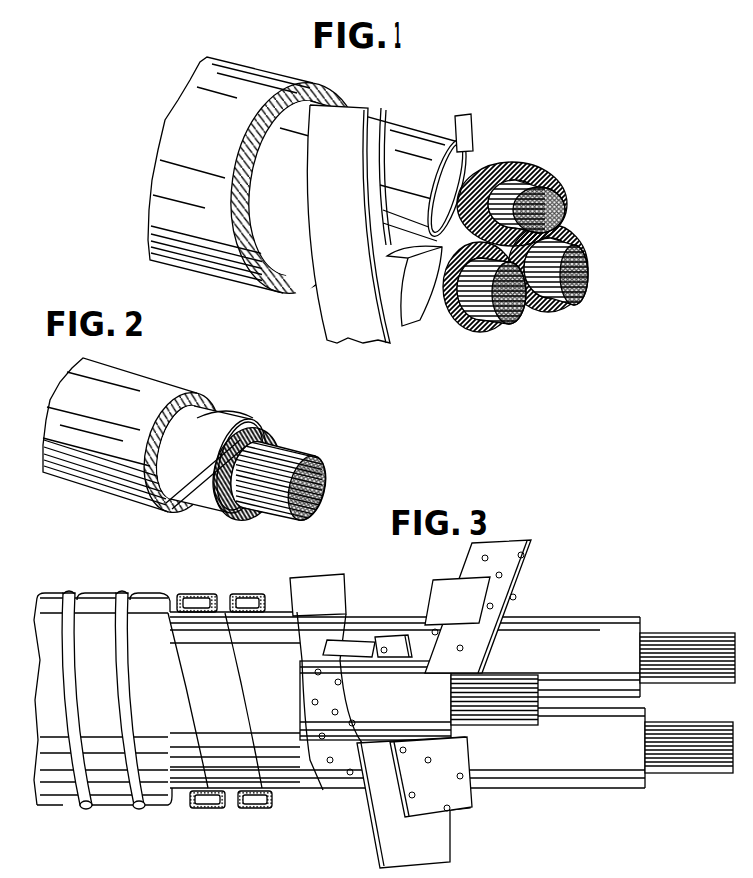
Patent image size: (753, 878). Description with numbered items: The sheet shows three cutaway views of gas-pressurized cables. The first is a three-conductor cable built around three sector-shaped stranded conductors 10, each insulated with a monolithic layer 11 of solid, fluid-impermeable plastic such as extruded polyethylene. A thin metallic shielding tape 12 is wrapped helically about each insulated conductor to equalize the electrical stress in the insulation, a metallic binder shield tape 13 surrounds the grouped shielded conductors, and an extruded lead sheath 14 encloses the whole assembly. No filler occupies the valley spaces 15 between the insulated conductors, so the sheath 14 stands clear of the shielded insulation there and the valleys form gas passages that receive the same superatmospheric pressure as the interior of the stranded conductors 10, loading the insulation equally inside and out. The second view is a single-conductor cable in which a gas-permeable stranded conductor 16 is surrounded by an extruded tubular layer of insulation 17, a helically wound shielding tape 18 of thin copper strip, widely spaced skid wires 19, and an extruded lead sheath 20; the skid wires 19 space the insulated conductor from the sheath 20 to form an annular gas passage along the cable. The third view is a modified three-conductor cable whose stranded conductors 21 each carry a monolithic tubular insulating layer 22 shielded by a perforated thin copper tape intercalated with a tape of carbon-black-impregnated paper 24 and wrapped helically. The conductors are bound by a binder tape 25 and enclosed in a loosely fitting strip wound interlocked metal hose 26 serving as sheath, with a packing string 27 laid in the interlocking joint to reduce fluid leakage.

In FIG. 1, the sector-shaped stranded conductor 10 is at (565, 193).
In FIG. 1, the insulating layer 11 is at (531, 165).
In FIG. 1, the metallic shielding tape 12 is at (481, 132).
In FIG. 1, the metallic binder shield tape 13 is at (331, 303).
In FIG. 1, the lead sheath 14 is at (251, 66).
In FIG. 1, the valley spaces 15 is at (383, 212).
In FIG. 2, the stranded conductor 16 is at (308, 461).
In FIG. 2, the tubular layer of insulation 17 is at (276, 433).
In FIG. 2, the shielding tape 18 is at (246, 420).
In FIG. 2, the skid wires 19 is at (203, 444).
In FIG. 2, the lead sheath 20 is at (150, 377).
In FIG. 3, the stranded conductor 21 is at (688, 634).
In FIG. 3, the tubular insulating layer 22 is at (588, 617).
In FIG. 3, the tape of carbon-black-impregnated paper 24 is at (446, 580).
In FIG. 3, the binder tape 25 is at (331, 578).
In FIG. 3, the strip wound interlocked metal hose 26 is at (200, 594).
In FIG. 3, the packing string 27 is at (252, 808).